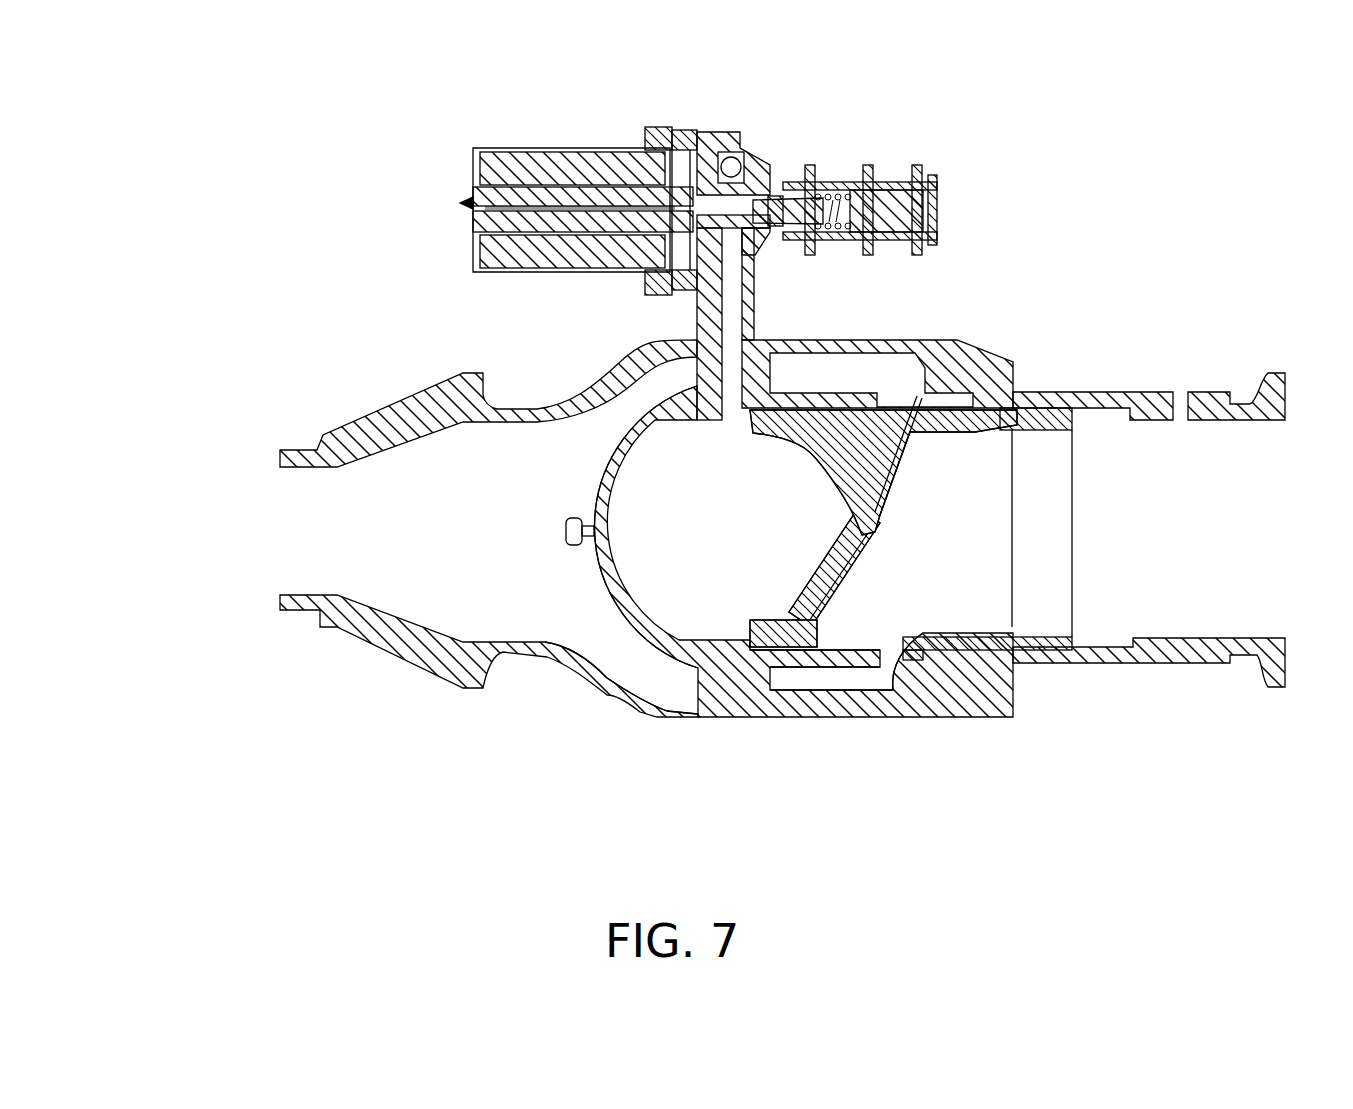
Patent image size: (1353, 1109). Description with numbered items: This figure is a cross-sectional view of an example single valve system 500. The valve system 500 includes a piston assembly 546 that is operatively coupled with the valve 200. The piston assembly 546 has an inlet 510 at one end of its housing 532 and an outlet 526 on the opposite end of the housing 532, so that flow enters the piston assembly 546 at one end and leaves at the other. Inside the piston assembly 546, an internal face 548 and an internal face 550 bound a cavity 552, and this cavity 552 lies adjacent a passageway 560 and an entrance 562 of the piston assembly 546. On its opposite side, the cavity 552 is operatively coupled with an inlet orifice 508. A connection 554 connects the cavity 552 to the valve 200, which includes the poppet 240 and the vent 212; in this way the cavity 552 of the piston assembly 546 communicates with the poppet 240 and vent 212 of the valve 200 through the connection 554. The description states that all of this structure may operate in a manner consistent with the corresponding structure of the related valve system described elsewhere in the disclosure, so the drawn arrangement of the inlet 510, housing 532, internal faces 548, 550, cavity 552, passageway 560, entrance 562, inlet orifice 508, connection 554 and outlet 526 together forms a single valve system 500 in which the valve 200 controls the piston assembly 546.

The single valve system 500 is at (222, 165).
The valve 200 is at (873, 120).
The vent 212 is at (795, 185).
The poppet 240 is at (800, 230).
The connection 554 is at (723, 331).
The housing 532 is at (318, 437).
The inlet orifice 508 is at (568, 525).
The internal face 550 is at (892, 532).
The cavity 552 is at (662, 527).
The inlet 510 is at (340, 527).
The outlet 526 is at (1240, 545).
The internal face 548 is at (803, 552).
The passageway 560 is at (483, 543).
The entrance 562 is at (1097, 552).
The piston assembly 546 is at (858, 567).